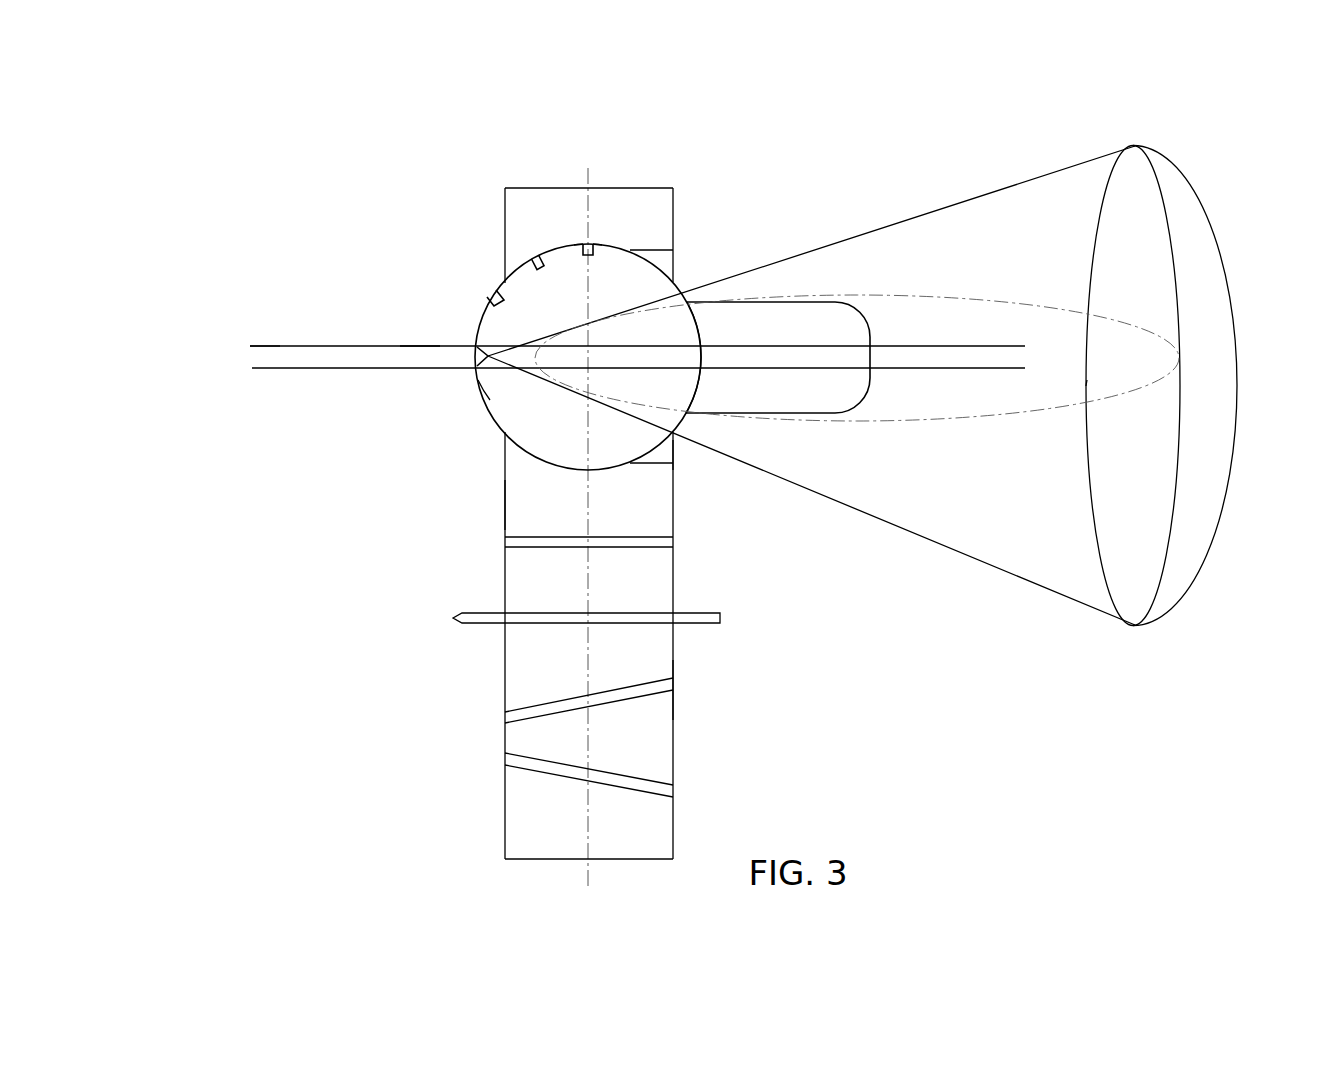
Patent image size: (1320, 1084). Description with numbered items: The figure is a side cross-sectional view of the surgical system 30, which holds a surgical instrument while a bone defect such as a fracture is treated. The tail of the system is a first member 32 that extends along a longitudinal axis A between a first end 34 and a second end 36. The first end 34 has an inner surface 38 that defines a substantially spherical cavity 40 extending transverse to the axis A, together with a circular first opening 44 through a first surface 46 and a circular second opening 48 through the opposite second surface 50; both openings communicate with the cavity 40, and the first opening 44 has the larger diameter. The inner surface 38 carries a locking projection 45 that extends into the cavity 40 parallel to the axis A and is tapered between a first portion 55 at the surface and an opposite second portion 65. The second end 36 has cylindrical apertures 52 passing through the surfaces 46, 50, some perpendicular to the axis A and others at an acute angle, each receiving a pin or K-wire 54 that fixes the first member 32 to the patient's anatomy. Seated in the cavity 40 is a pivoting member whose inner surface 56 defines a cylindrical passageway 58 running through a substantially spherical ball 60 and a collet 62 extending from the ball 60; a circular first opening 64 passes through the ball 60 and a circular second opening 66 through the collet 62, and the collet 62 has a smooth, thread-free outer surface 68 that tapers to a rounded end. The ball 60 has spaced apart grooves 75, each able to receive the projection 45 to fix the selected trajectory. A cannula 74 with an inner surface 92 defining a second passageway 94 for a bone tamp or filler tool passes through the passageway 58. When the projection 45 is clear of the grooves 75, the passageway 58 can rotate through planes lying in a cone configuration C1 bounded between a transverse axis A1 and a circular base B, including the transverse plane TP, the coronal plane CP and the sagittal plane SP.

The surgical system 30 is at (873, 695).
The first member 32 is at (443, 660).
The first end 34 is at (505, 186).
The second end 36 is at (533, 862).
The inner surface 38 is at (675, 450).
The spherical cavity 40 is at (686, 248).
The first opening 44 is at (684, 451).
The projection 45 is at (600, 246).
The first surface 46 is at (673, 700).
The second opening 48 is at (498, 440).
The second surface 50 is at (503, 512).
The cylindrical aperture 52 is at (501, 540).
The pin or K-wire 54 is at (719, 608).
The first portion 55 is at (594, 244).
The inner surface 56 is at (742, 345).
The passageway 58 is at (792, 345).
The ball 60 is at (498, 403).
The collet 62 is at (850, 405).
The first opening 64 is at (463, 374).
The second portion 65 is at (578, 246).
The second opening 66 is at (873, 343).
The outer surface 68 is at (820, 400).
The cannula 74 is at (316, 325).
The grooves 75 is at (531, 257).
The inner surface 92 is at (255, 347).
The second passageway 94 is at (413, 350).
The longitudinal axis A is at (587, 533).
The transverse axis A1 is at (665, 357).
The circular base B is at (1195, 200).
The cone configuration C1 is at (916, 555).
The coronal plane CP is at (1097, 558).
The sagittal plane SP is at (957, 295).
The transverse plane TP is at (1172, 508).